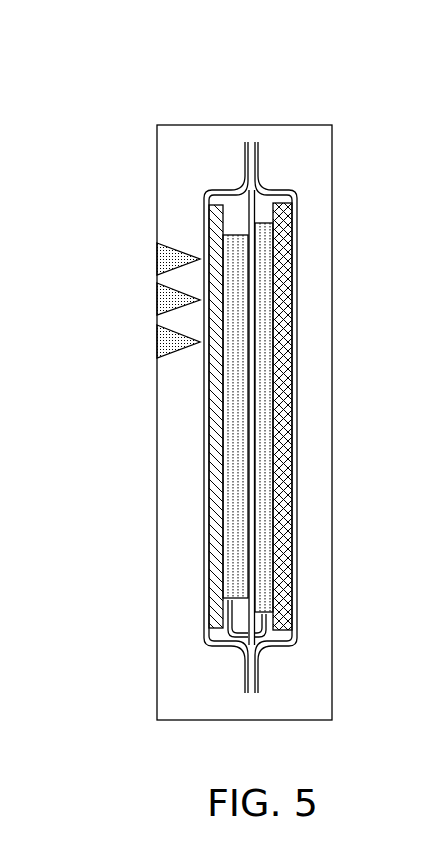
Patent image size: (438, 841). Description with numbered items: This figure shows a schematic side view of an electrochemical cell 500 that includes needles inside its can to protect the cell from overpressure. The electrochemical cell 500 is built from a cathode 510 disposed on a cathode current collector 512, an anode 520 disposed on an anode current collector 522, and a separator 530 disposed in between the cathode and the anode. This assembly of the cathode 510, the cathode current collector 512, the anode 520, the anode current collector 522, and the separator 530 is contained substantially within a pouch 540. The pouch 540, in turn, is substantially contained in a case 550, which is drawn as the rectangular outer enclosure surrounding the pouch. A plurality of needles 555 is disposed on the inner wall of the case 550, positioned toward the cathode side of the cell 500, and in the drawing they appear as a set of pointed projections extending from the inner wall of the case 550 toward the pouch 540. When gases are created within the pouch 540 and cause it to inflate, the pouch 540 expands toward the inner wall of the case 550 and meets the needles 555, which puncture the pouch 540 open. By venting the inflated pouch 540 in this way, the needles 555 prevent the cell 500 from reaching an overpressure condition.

The electrochemical cell 500 is at (118, 95).
The case 550 is at (250, 124).
The pouch 540 is at (205, 192).
The separator 530 is at (252, 205).
The needles 555 is at (172, 236).
The cathode current collector 512 is at (214, 495).
The anode current collector 522 is at (287, 460).
The cathode 510 is at (245, 640).
The anode 520 is at (265, 648).